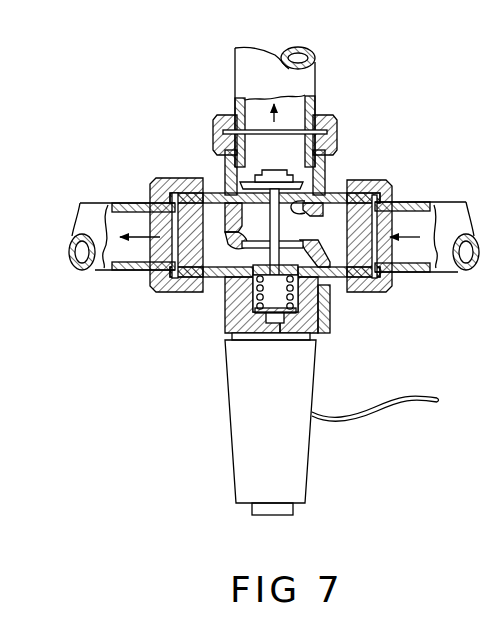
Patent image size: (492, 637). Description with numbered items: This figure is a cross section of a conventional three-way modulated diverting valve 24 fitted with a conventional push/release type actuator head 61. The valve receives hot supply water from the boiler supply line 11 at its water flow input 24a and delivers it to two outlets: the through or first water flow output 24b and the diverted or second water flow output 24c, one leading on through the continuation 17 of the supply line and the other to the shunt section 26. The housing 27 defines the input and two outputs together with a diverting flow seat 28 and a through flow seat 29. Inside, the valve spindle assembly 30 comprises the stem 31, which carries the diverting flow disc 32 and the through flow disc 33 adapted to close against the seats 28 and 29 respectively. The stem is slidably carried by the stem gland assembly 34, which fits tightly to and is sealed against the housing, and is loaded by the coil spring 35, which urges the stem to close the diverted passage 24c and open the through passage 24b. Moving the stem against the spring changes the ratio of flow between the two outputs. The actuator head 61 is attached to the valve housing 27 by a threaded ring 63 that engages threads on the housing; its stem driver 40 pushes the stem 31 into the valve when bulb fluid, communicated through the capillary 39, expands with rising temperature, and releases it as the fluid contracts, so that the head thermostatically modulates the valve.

The supply line 11 is at (444, 281).
The continuation of the supply line 17 is at (318, 69).
The three-way modulated diverting valve 24 is at (122, 327).
The water flow input 24a is at (378, 304).
The first water flow output 24b is at (188, 165).
The second water flow output 24c is at (347, 139).
The shunt section 26 is at (98, 201).
The housing 27 is at (320, 186).
The diverting flow seat 28 is at (302, 206).
The through flow seat 29 is at (240, 244).
The valve spindle assembly 30 is at (216, 313).
The stem 31 is at (225, 219).
The diverting flow disc 32 is at (250, 180).
The through flow disc 33 is at (312, 245).
The stem gland assembly 34 is at (322, 302).
The coil spring 35 is at (228, 298).
The capillary 39 is at (378, 414).
The stem driver 40 is at (268, 332).
The push/release type actuator head 61 is at (232, 457).
The threaded ring 63 is at (320, 322).